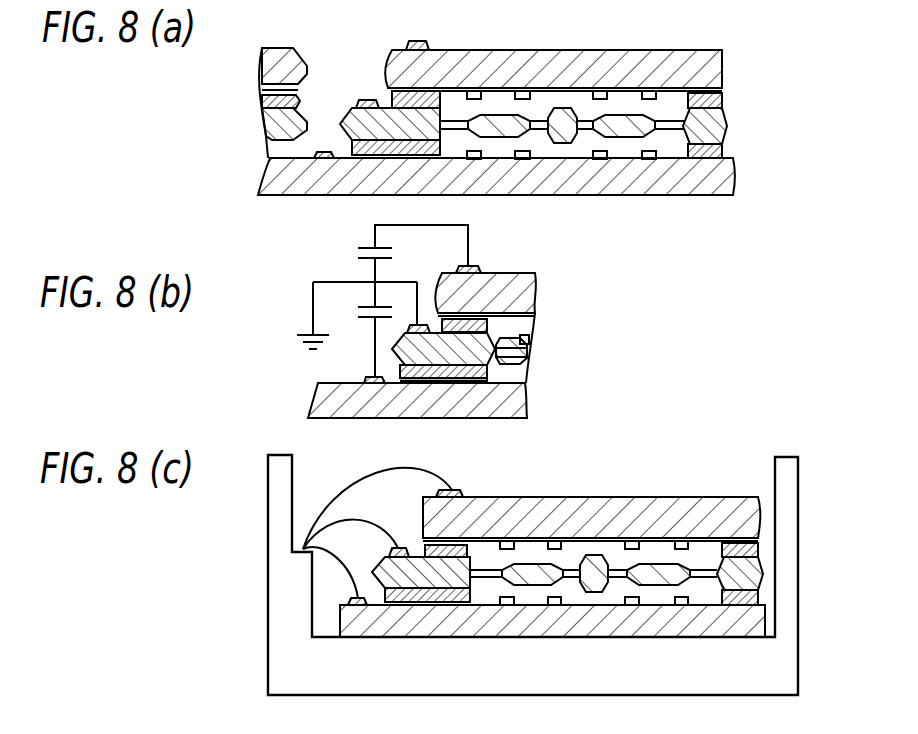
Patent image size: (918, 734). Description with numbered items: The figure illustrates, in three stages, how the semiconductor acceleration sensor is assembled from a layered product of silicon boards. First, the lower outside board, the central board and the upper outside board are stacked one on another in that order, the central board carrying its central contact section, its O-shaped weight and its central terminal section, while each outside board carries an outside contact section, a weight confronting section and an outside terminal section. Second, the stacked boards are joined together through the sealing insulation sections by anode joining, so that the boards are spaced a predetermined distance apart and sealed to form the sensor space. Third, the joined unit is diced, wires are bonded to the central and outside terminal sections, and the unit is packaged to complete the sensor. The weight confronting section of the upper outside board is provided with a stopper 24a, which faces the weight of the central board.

The stopper 24a is at (683, 541).